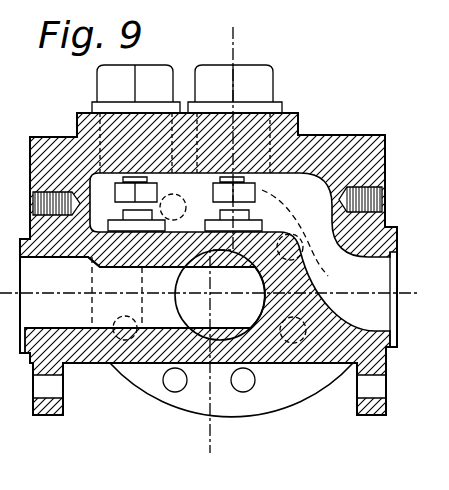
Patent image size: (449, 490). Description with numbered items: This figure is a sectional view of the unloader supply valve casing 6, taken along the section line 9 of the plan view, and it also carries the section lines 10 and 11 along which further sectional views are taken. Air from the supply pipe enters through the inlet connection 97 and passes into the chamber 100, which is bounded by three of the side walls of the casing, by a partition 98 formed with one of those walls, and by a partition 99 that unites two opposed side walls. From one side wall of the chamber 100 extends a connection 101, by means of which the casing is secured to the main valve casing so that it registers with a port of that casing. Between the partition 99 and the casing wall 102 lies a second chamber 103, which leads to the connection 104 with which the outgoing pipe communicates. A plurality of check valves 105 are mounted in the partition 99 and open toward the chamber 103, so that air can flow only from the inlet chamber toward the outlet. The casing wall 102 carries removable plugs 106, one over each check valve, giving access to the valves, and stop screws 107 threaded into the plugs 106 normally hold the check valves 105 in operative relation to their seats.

The valve casing 6 is at (92, 347).
The section line 9 is at (10, 304).
The section line 10 is at (9, 296).
The section line 11 is at (230, 47).
The inlet connection 97 is at (142, 305).
The partition 98 is at (292, 279).
The partition 99 is at (93, 265).
The chamber 100 is at (114, 298).
The connection 101 is at (186, 304).
The casing wall 102 is at (288, 128).
The chamber 103 is at (343, 167).
The connection 104 is at (372, 299).
The check valves 105 is at (160, 217).
The removable plugs 106 is at (292, 84).
The stop screws 107 is at (318, 183).